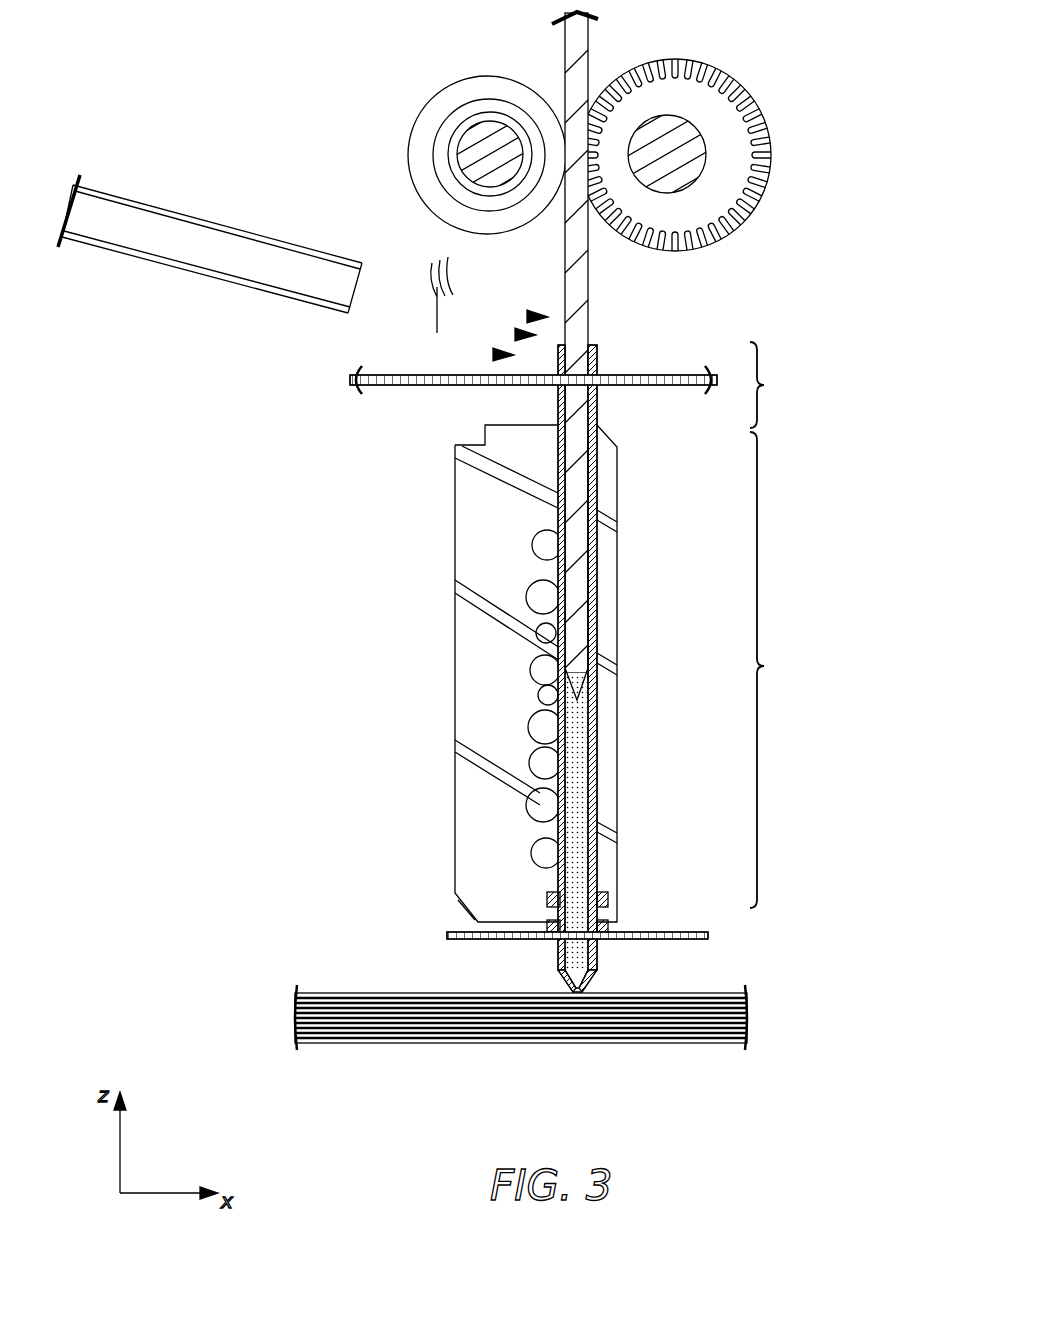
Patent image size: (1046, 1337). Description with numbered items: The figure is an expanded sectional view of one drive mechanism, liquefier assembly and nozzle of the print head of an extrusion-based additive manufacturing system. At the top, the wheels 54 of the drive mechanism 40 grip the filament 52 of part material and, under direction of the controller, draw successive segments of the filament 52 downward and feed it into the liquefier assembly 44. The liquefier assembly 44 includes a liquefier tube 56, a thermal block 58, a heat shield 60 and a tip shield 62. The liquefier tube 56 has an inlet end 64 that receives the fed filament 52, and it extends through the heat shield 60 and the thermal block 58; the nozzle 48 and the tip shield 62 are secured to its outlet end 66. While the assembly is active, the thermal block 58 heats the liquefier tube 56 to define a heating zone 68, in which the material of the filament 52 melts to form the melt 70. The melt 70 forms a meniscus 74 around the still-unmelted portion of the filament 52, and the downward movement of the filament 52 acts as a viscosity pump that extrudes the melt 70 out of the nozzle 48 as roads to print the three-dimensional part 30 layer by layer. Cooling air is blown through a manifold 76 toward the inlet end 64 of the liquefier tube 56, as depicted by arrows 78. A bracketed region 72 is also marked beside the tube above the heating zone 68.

The 3D part 30 is at (725, 990).
The drive mechanism 40 is at (563, 342).
The liquefier assembly 44 is at (492, 643).
The nozzle 48 is at (558, 977).
The filament 52 is at (569, 75).
The wheels 54 is at (415, 172).
The liquefier tube 56 is at (597, 585).
The thermal block 58 is at (462, 697).
The heat shield 60 is at (385, 386).
The tip shield 62 is at (460, 930).
The inlet end 64 is at (603, 643).
The outlet end 66 is at (618, 958).
The heating zone 68 is at (776, 670).
The melt 70 is at (583, 778).
The transition zone 72 is at (776, 385).
The meniscus 74 is at (596, 692).
The manifold 76 is at (182, 212).
The arrows 78 is at (478, 302).